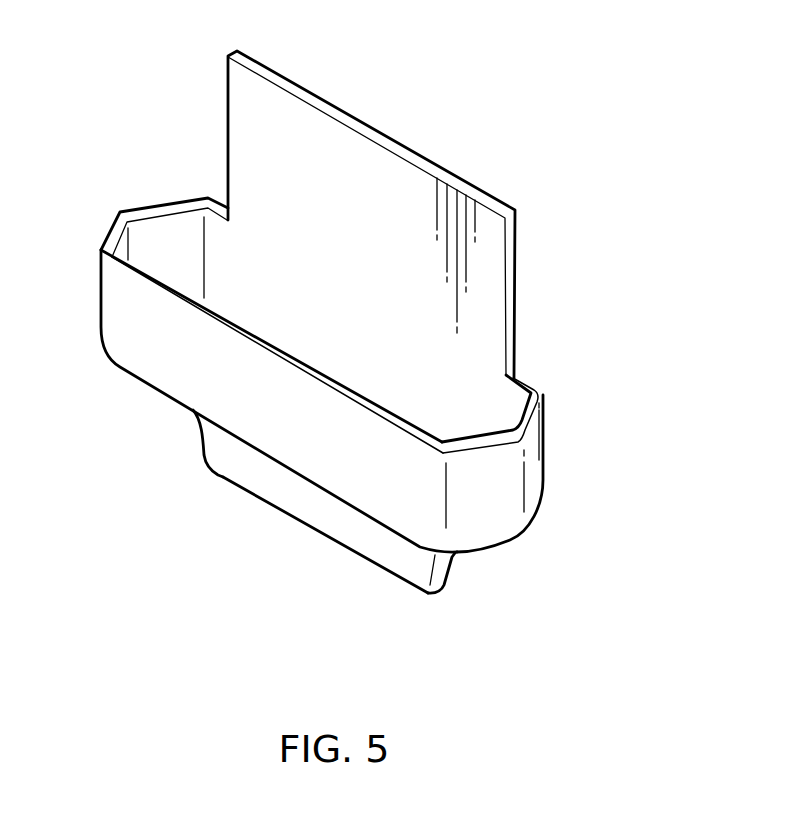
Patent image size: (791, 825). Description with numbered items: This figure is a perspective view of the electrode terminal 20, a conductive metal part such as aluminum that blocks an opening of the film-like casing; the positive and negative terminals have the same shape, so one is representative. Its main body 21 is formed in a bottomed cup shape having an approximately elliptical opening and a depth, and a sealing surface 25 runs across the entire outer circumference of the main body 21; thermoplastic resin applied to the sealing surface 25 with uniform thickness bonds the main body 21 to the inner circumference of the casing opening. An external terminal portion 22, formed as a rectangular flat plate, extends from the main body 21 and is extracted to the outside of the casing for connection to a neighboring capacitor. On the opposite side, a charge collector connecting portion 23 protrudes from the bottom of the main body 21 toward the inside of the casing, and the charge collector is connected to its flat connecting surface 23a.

The electrode terminal 20 is at (628, 233).
The main body 21 is at (527, 385).
The external terminal portion 22 is at (348, 120).
The charge collector connecting portion 23 is at (247, 493).
The connecting surface 23a is at (347, 523).
The sealing surface 25 is at (163, 360).